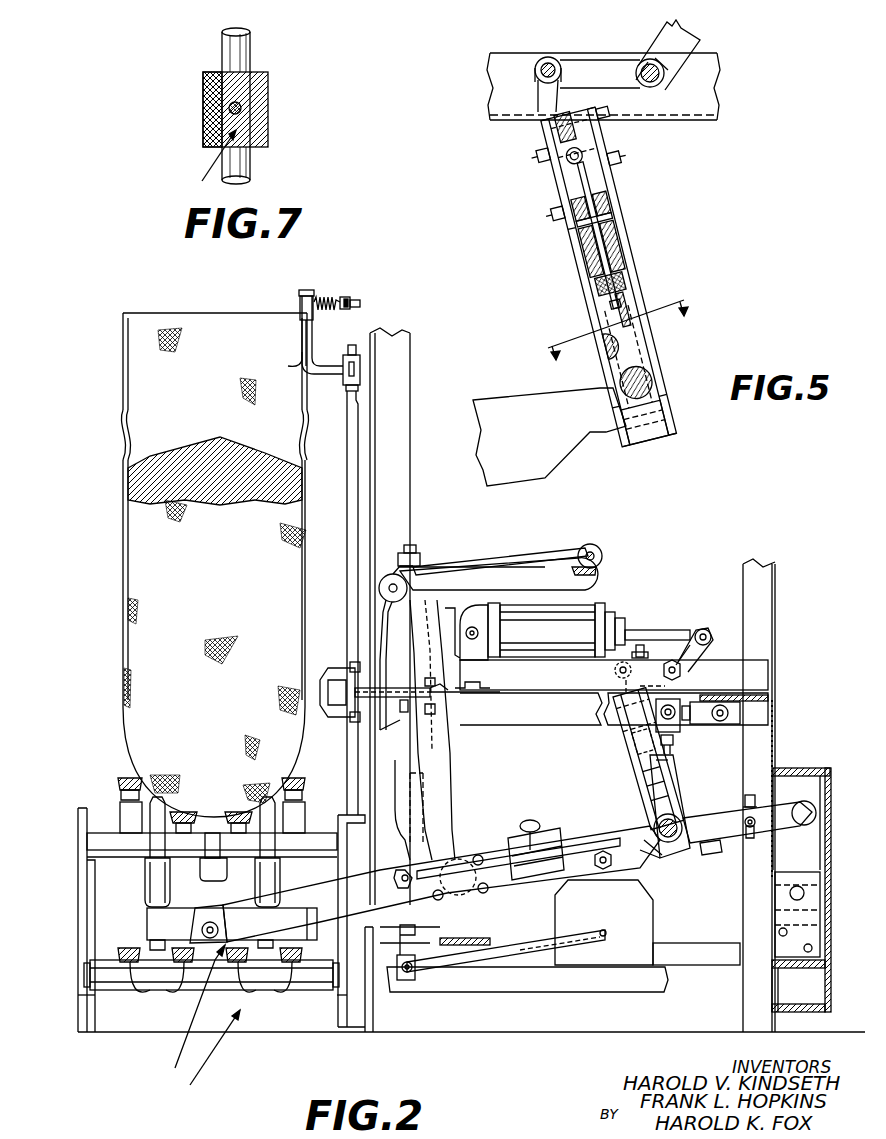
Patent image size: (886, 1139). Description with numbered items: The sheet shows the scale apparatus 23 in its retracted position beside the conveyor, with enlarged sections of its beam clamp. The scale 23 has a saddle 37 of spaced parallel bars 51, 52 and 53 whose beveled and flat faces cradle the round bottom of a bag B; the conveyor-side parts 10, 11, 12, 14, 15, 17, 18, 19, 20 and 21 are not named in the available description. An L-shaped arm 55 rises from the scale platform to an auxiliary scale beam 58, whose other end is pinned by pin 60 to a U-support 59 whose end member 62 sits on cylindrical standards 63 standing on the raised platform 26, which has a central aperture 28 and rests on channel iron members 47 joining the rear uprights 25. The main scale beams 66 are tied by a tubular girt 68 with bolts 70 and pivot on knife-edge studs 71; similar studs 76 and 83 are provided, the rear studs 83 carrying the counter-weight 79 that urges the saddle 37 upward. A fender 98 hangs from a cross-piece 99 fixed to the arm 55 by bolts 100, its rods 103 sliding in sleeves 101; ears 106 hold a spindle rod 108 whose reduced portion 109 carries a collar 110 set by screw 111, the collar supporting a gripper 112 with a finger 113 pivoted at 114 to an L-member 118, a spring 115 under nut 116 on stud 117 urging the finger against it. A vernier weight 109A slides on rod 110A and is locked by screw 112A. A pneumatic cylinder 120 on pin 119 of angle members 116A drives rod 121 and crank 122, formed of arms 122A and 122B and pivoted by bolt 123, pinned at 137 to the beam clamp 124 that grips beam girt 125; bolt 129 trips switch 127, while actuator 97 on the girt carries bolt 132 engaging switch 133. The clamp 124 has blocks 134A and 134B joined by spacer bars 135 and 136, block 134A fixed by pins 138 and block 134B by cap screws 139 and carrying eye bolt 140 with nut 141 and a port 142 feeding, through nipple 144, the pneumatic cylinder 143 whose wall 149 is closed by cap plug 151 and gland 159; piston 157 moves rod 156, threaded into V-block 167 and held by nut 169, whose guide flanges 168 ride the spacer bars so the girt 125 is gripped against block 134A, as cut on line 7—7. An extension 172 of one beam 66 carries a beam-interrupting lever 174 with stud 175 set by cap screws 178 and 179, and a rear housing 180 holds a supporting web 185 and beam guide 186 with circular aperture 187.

In FIG. 2, the machine 10 is at (207, 1056).
In FIG. 2, the support pads 11 is at (165, 992).
In FIG. 2, the resilient pads 12 is at (118, 783).
In FIG. 2, the roller 14 is at (200, 975).
In FIG. 2, the support blocks 15 is at (128, 814).
In FIG. 2, the frame side 17 is at (88, 955).
In FIG. 2, the frame wall 18 is at (83, 808).
In FIG. 2, the frame wall 19 is at (345, 815).
In FIG. 2, the frame base 20 is at (87, 998).
In FIG. 2, the frame base 21 is at (337, 1000).
In FIG. 2, the scale apparatus 23 is at (188, 1014).
In FIG. 2, the rear uprights 25 is at (776, 605).
In FIG. 2, the raised platform 26 is at (700, 946).
In FIG. 2, the aperture 28 is at (480, 942).
In FIG. 2, the saddle 37 is at (145, 905).
In FIG. 2, the channel iron members 47 is at (500, 1020).
In FIG. 2, the saddle bar 51 is at (160, 800).
In FIG. 2, the center saddle bar 52 is at (212, 833).
In FIG. 2, the saddle bar 53 is at (266, 800).
In FIG. 2, the L-shaped arm 55 is at (452, 780).
In FIG. 2, the auxiliary scale beam 58 is at (515, 560).
In FIG. 2, the U-support 59 is at (528, 582).
In FIG. 2, the pin 60 is at (592, 544).
In FIG. 2, the open end member of U-support 62 is at (420, 573).
In FIG. 2, the cylindrical standards 63 is at (405, 773).
In FIG. 5, the scale beams 66 is at (512, 438).
In FIG. 2, the scale beams 66 is at (728, 815).
In FIG. 2, the girt 68 is at (462, 858).
In FIG. 2, the bolts 70 is at (480, 855).
In FIG. 2, the studs 71 is at (410, 866).
In FIG. 2, the knife-edge studs 76 is at (208, 922).
In FIG. 2, the counter-weight 79 is at (640, 922).
In FIG. 2, the knife-edged studs 83 is at (603, 851).
In FIG. 2, the beam clamp switch actuator 97 is at (650, 797).
In FIG. 2, the fender 98 is at (320, 690).
In FIG. 2, the cross-piece 99 is at (400, 728).
In FIG. 2, the bolts 100 is at (402, 712).
In FIG. 2, the sleeves 101 is at (380, 686).
In FIG. 2, the supporting rods 103 is at (460, 693).
In FIG. 2, the ears 106 is at (350, 660).
In FIG. 2, the spindle rod 108 is at (370, 490).
In FIG. 2, the reduced portion 109 is at (358, 390).
In FIG. 2, the vernier weight 109A is at (548, 830).
In FIG. 2, the collar 110 is at (360, 360).
In FIG. 2, the rod 110A is at (565, 842).
In FIG. 2, the set screw 111 is at (346, 388).
In FIG. 2, the gripper 112 is at (300, 325).
In FIG. 2, the lock screw 112A is at (530, 818).
In FIG. 2, the finger 113 is at (290, 347).
In FIG. 2, the pivot 114 is at (306, 290).
In FIG. 2, the spring 115 is at (328, 297).
In FIG. 5, the nut 116 is at (500, 77).
In FIG. 2, the nut 116 is at (346, 298).
In FIG. 2, the angle members 116A is at (770, 677).
In FIG. 2, the stud 117 is at (360, 303).
In FIG. 2, the L-member 118 is at (315, 342).
In FIG. 2, the pin 119 is at (473, 626).
In FIG. 2, the pneumatic cylinder 120 is at (575, 610).
In FIG. 2, the piston rod 121 is at (655, 630).
In FIG. 5, the crank 122 is at (665, 31).
In FIG. 2, the crank 122 is at (712, 650).
In FIG. 5, the crank arms 122A is at (692, 44).
In FIG. 2, the crank arms 122A is at (675, 655).
In FIG. 5, the crank arms 122B is at (594, 59).
In FIG. 2, the crank arms 122B is at (666, 688).
In FIG. 5, the pivot bolt 123 is at (658, 80).
In FIG. 2, the pivot bolt 123 is at (682, 673).
In FIG. 5, the beam clamp 124 is at (568, 262).
In FIG. 2, the beam clamp 124 is at (626, 760).
In FIG. 7, the beam girt 125 is at (245, 52).
In FIG. 5, the beam girt 125 is at (660, 386).
In FIG. 2, the beam girt 125 is at (672, 840).
In FIG. 2, the beam clamp switch 127 is at (742, 711).
In FIG. 2, the bolt 129 is at (640, 645).
In FIG. 2, the adjustable bolt 132 is at (674, 747).
In FIG. 2, the switch 133 is at (682, 724).
In FIG. 5, the block 134A is at (650, 442).
In FIG. 2, the block 134A is at (660, 860).
In FIG. 5, the block 134B is at (548, 156).
In FIG. 7, the spacer bar 135 is at (210, 105).
In FIG. 5, the spacer bar 135 is at (576, 244).
In FIG. 7, the spacer bar 136 is at (268, 116).
In FIG. 5, the spacer bar 136 is at (626, 224).
In FIG. 5, the pin 137 is at (548, 57).
In FIG. 2, the pin 137 is at (614, 672).
In FIG. 5, the rivets or pins 138 is at (610, 442).
In FIG. 5, the cap screws 139 is at (530, 142).
In FIG. 5, the eye bolt 140 is at (540, 96).
In FIG. 5, the nut 141 is at (571, 108).
In FIG. 5, the port 142 is at (568, 174).
In FIG. 5, the pneumatic cylinder 143 is at (568, 226).
In FIG. 2, the pneumatic cylinder 143 is at (628, 744).
In FIG. 5, the tubular nipple 144 is at (600, 190).
In FIG. 5, the cylinder wall 149 is at (602, 201).
In FIG. 5, the cap plug 151 is at (626, 246).
In FIG. 7, the piston rod 156 is at (230, 110).
In FIG. 5, the piston rod 156 is at (600, 303).
In FIG. 5, the piston 157 is at (610, 214).
In FIG. 5, the gland 159 is at (596, 290).
In FIG. 7, the V-block 167 is at (203, 160).
In FIG. 5, the V-block 167 is at (660, 345).
In FIG. 2, the V-block 167 is at (670, 800).
In FIG. 7, the guide flanges 168 is at (268, 72).
In FIG. 5, the nut 169 is at (626, 298).
In FIG. 2, the extending portion 172 is at (725, 855).
In FIG. 2, the beam-interrupting lever 174 is at (826, 800).
In FIG. 2, the stud 175 is at (800, 803).
In FIG. 2, the cap screw 178 is at (750, 795).
In FIG. 2, the cap screw 179 is at (760, 836).
In FIG. 2, the housing 180 is at (805, 785).
In FIG. 2, the supporting web 185 is at (800, 976).
In FIG. 2, the beam guide 186 is at (808, 873).
In FIG. 2, the circular aperture 187 is at (804, 890).
In FIG. 5, the section line 7— 7 is at (612, 332).
In FIG. 2, the bag B is at (135, 580).